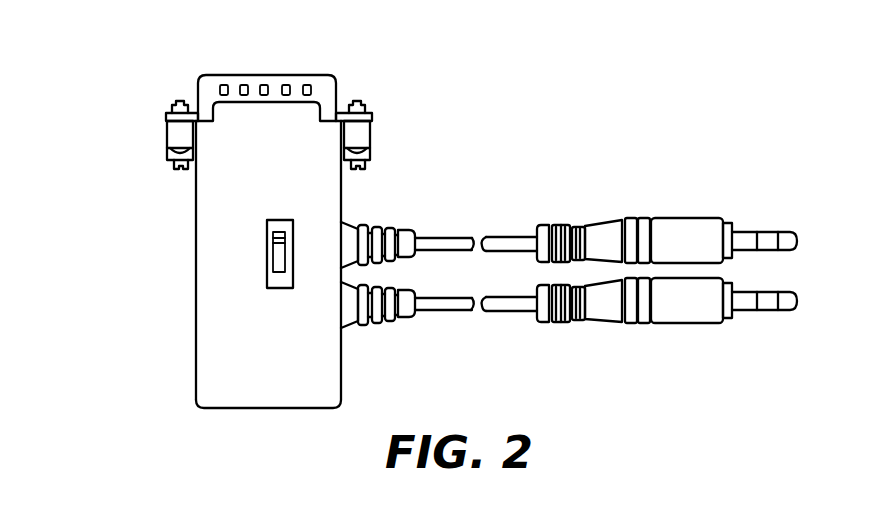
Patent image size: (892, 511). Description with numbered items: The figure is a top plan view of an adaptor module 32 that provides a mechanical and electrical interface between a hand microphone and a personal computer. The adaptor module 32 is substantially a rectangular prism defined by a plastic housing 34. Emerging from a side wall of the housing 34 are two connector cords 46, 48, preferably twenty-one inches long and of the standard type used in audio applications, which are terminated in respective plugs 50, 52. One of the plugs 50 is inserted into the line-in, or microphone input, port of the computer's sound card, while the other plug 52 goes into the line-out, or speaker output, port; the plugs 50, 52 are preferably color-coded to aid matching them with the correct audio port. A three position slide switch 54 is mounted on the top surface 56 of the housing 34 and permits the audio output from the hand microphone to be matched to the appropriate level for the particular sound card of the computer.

The adaptor module 32 is at (165, 65).
The plastic housing 34 is at (263, 391).
The connector cord 46 is at (503, 238).
The connector cord 48 is at (507, 308).
The plug 50 is at (683, 232).
The plug 52 is at (687, 318).
The three position slide switch 54 is at (306, 217).
The top surface 56 is at (213, 341).